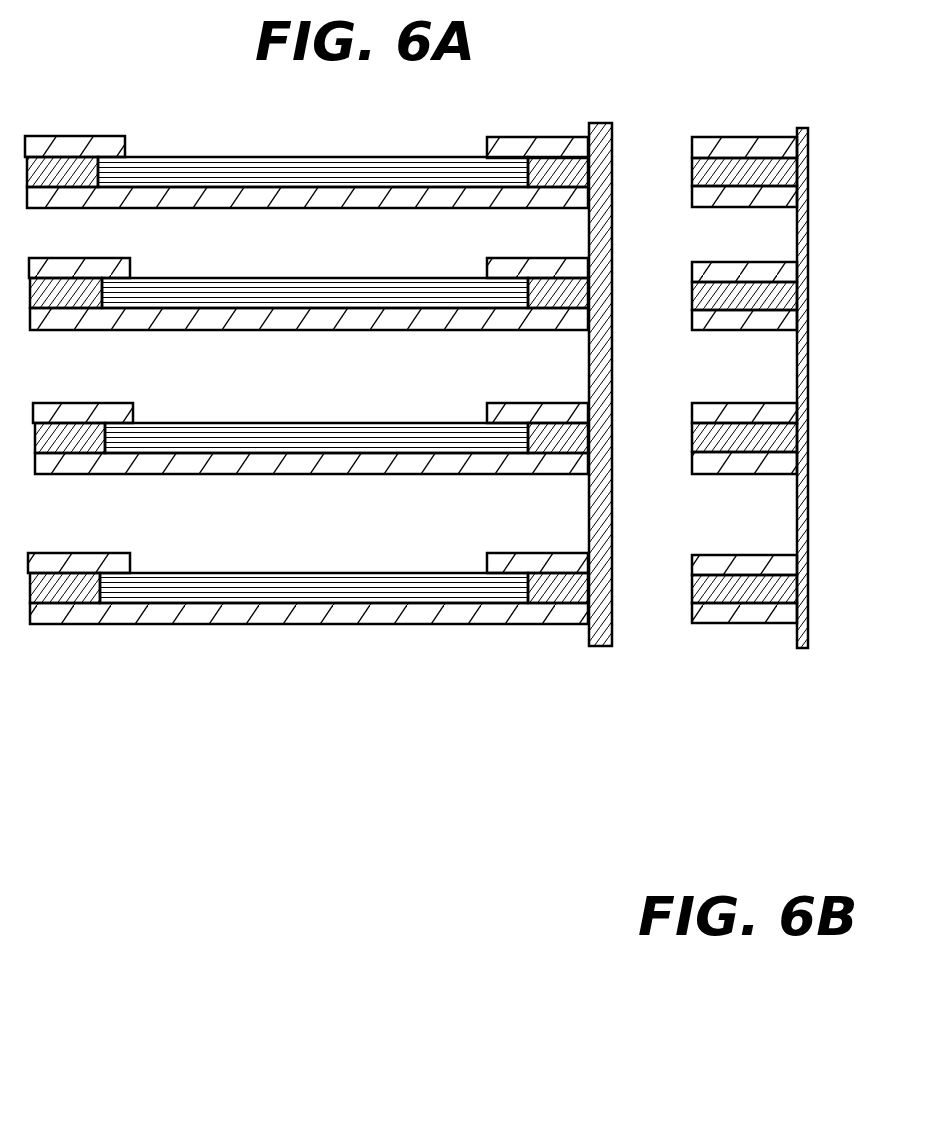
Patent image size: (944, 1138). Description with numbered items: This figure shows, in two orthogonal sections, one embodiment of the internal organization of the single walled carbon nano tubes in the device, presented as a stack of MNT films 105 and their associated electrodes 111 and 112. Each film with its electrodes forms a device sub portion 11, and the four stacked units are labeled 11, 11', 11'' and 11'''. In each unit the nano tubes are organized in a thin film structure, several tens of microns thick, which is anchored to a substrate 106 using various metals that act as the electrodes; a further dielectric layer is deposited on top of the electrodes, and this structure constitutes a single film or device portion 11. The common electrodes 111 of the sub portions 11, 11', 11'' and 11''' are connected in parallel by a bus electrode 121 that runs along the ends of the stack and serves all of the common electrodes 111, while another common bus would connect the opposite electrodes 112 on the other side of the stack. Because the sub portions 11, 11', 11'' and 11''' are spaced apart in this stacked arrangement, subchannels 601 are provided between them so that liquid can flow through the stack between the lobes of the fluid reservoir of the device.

In FIG. 6A, the device sub portion 11 is at (308, 675).
In FIG. 6B, the device sub portion 11 is at (722, 680).
In FIG. 6A, the device sub portion 11' is at (310, 414).
In FIG. 6B, the device sub portion 11' is at (719, 461).
In FIG. 6A, the device sub portion 11'' is at (308, 280).
In FIG. 6B, the device sub portion 11'' is at (712, 277).
In FIG. 6A, the device sub portion 11''' is at (306, 109).
In FIG. 6B, the device sub portion 11''' is at (716, 126).
In FIG. 6A, the MNT film 105 is at (315, 573).
In FIG. 6A, the substrate 106 is at (315, 624).
In FIG. 6A, the common electrode 111 is at (567, 603).
In FIG. 6A, the opposite electrode 112 is at (65, 603).
In FIG. 6A, the bus electrode 121 is at (601, 646).
In FIG. 6B, the bus electrode 121 is at (805, 666).
In FIG. 6A, the subchannel 601 is at (395, 117).
In FIG. 6B, the subchannel 601 is at (705, 382).